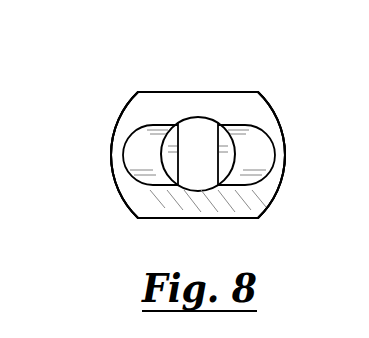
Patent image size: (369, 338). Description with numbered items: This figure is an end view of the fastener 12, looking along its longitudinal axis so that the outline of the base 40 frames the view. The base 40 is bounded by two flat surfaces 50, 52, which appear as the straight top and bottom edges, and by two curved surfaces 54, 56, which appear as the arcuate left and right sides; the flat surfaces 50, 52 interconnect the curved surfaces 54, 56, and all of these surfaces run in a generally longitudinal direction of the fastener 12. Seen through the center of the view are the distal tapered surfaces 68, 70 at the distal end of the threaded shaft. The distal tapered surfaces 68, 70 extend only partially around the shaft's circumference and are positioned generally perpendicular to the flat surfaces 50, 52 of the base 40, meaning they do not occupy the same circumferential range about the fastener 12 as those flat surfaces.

The fastener 12 is at (105, 73).
The base 40 is at (157, 107).
The flat surface 52 is at (218, 92).
The flat surface 50 is at (168, 218).
The curved surface 54 is at (115, 182).
The curved surface 56 is at (273, 195).
The distal tapered surface 68 is at (162, 150).
The distal tapered surface 70 is at (223, 143).